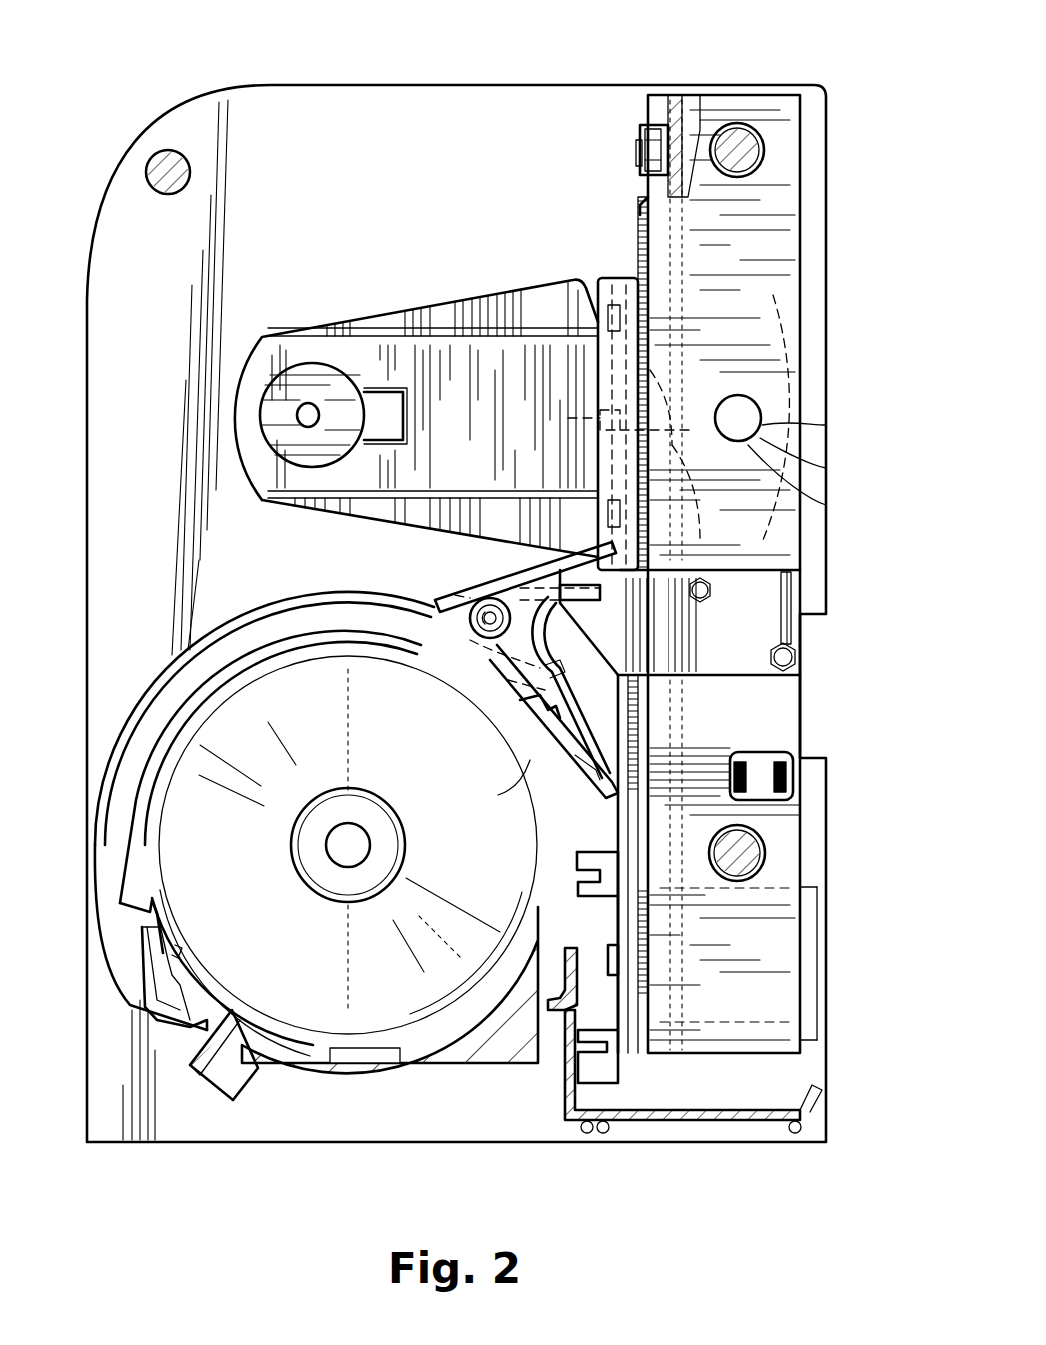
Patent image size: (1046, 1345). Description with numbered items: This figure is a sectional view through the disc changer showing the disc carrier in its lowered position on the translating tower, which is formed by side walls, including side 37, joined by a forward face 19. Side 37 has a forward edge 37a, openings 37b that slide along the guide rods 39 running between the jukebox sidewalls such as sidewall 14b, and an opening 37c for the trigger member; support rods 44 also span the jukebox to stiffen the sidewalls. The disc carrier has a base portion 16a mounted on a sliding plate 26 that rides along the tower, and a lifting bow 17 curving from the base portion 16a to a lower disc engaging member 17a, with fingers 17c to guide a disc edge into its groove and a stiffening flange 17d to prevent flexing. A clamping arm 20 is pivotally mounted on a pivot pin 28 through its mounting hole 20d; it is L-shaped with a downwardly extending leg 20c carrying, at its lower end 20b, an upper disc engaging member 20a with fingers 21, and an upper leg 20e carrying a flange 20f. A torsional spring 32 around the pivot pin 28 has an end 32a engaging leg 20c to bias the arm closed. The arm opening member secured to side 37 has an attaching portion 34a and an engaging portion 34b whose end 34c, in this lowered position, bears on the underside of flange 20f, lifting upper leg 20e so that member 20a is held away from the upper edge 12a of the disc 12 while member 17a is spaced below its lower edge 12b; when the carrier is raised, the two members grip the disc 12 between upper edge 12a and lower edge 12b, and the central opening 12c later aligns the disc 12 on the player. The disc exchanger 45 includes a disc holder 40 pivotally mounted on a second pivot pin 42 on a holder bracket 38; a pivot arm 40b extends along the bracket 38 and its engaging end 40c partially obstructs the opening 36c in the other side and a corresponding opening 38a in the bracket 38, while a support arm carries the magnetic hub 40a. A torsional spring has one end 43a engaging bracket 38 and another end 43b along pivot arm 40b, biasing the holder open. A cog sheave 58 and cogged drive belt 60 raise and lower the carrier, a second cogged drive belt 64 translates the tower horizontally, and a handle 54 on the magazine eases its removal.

The disc 12 is at (380, 765).
The upper portion of the disc edge 12a is at (492, 782).
The lower edge of the disc 12b is at (190, 948).
The center opening of the disc 12c is at (350, 868).
The sidewall of the jukebox 14b is at (352, 170).
The base portion of the disc carrier 16a is at (650, 717).
The lifting bow 17 is at (148, 733).
The lower disc engaging member 17a is at (140, 1000).
The fingers 17c is at (178, 945).
The stiffening flange 17d is at (288, 600).
The forward face of the translating tower 19 is at (680, 100).
The clamping arm 20 is at (470, 612).
The upper disc engaging member 20a is at (548, 780).
The lower end of the clamping arm 20b is at (660, 740).
The downwardly extending leg 20c is at (545, 712).
The mounting hole 20d is at (485, 655).
The upper leg of the clamping arm 20e is at (515, 580).
The flange 20f is at (602, 592).
The fingers 21 is at (585, 780).
The sliding plate 26 is at (640, 855).
The pivot pin 28 is at (467, 636).
The biasing member 32 is at (530, 690).
The end of the biasing member 32a is at (645, 690).
The attaching portion of the opening member 34a is at (767, 618).
The engaging portion of the opening member 34b is at (600, 612).
The end of the engaging portion 34c is at (600, 640).
The opening in tower side 36c is at (828, 503).
The side wall of the translating tower 37 is at (788, 270).
The forward edge of side wall 37a is at (656, 215).
The guide rod opening 37b is at (766, 148).
The trigger opening 37c is at (828, 427).
The holder bracket 38 is at (641, 285).
The opening in holder bracket 38a is at (828, 470).
The guide rods 39 is at (745, 158).
The disc holder 40 is at (447, 296).
The magnetic hub 40a is at (240, 413).
The pivot arm 40b is at (793, 400).
The engaging end of the pivot arm 40c is at (748, 405).
The second pivot pin 42 is at (604, 300).
The end of the holder biasing member 43a is at (608, 412).
The end of the holder biasing member 43b is at (680, 448).
The support rods 44 is at (168, 185).
The disc exchanger 45 is at (362, 268).
The handle 54 is at (205, 1085).
The second cog sheave 58 is at (645, 128).
The cogged drive belt 60 is at (653, 127).
The second cogged drive belt 64 is at (795, 768).